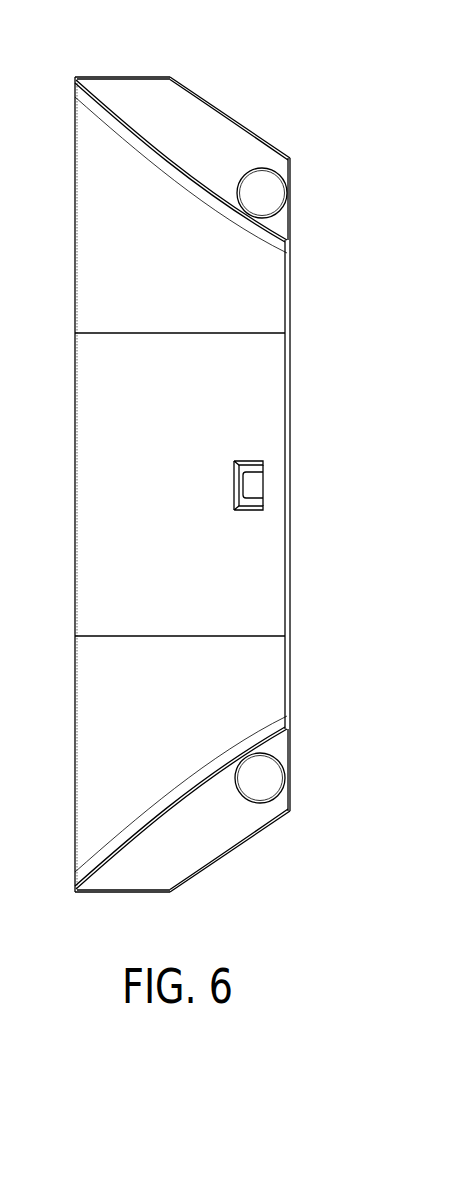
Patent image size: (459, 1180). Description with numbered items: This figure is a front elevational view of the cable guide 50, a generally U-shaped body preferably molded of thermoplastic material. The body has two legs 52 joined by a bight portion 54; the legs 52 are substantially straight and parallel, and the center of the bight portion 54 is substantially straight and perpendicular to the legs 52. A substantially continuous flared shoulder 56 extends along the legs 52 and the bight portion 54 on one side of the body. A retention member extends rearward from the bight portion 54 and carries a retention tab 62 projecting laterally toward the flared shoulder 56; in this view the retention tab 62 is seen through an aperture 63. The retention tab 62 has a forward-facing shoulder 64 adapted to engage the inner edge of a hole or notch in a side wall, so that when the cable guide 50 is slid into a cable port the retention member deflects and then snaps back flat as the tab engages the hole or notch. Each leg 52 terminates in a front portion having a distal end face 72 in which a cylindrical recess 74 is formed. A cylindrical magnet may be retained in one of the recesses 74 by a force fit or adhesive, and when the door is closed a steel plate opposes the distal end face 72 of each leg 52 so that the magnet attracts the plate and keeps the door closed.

The cable guide 50 is at (338, 70).
The leg 52 is at (278, 228).
The bight portion 54 is at (273, 600).
The flared shoulder 56 is at (93, 225).
The retention tab 62 is at (260, 488).
The aperture 63 is at (264, 468).
The forward-facing shoulder 64 is at (262, 495).
The distal end face 72 is at (189, 119).
The cylindrical recess 74 is at (266, 195).